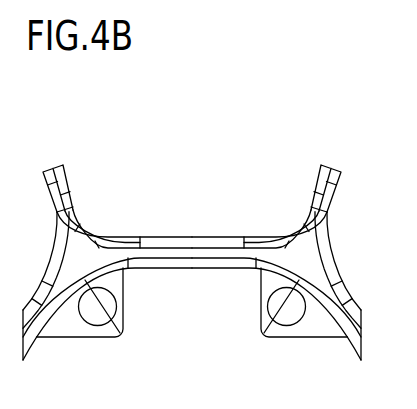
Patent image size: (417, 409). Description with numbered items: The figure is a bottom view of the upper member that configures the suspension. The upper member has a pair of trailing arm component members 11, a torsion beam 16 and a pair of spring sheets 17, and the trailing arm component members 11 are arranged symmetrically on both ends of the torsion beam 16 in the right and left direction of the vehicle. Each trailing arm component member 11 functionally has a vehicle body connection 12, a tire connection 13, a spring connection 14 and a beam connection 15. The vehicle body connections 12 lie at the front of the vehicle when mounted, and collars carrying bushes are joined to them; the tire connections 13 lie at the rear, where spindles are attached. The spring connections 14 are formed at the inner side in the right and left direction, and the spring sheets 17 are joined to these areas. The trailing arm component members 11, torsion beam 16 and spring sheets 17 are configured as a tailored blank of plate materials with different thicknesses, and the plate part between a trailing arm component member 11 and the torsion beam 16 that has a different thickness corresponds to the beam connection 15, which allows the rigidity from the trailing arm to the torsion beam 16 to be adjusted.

The trailing arm component member 11 is at (55, 228).
The vehicle body connection 12 is at (70, 167).
The tire connection 13 is at (40, 340).
The spring connection 14 is at (192, 317).
The beam connection 15 is at (247, 236).
The torsion beam 16 is at (181, 269).
The spring sheet 17 is at (97, 339).